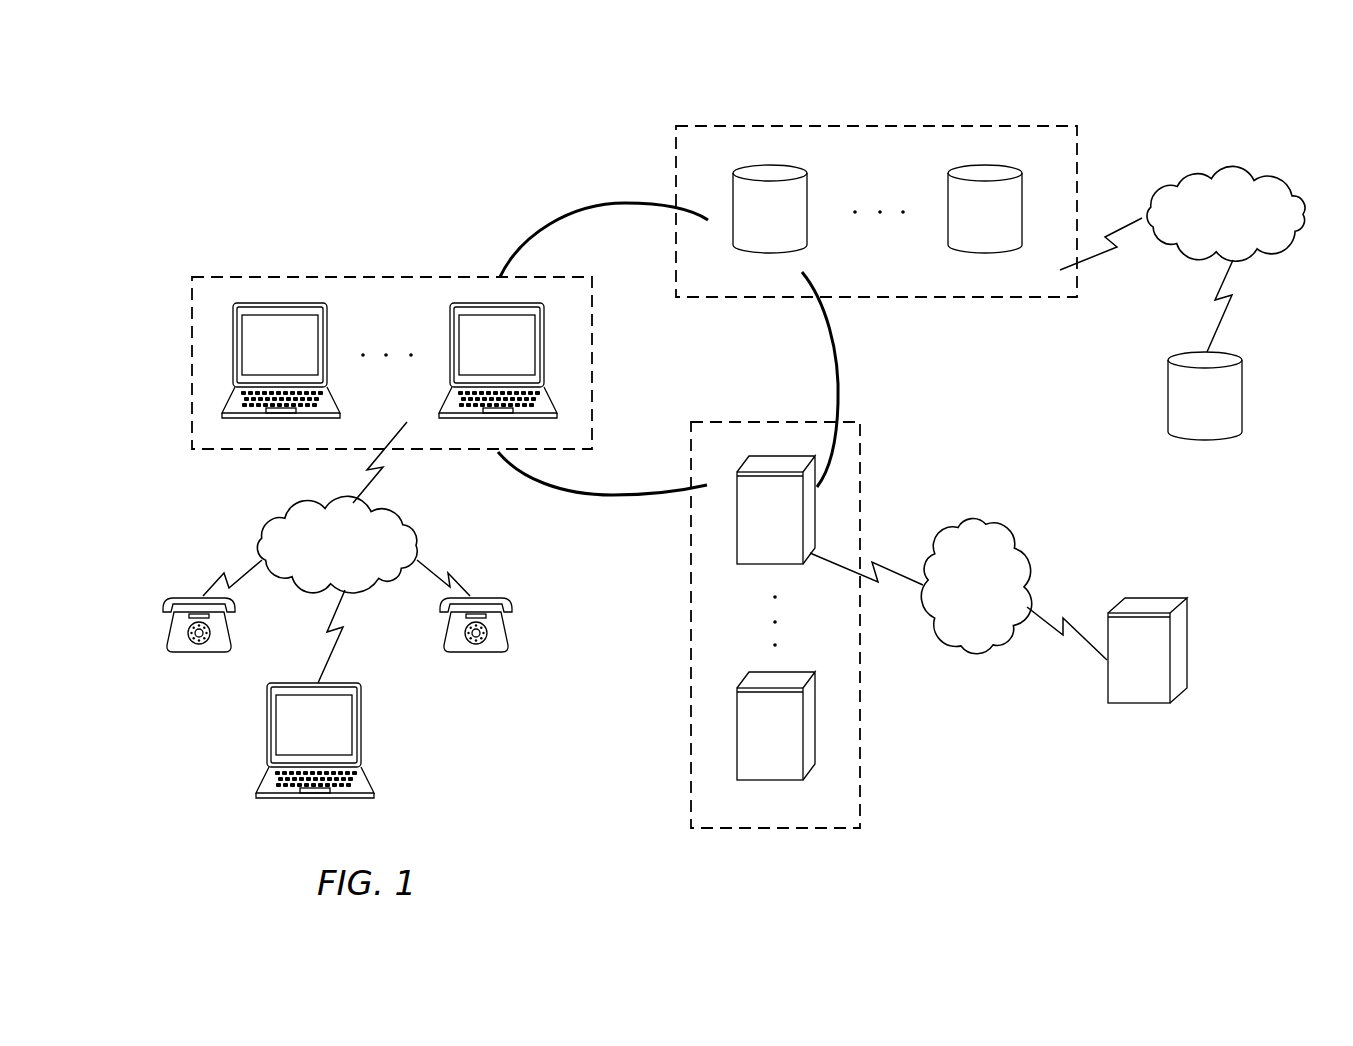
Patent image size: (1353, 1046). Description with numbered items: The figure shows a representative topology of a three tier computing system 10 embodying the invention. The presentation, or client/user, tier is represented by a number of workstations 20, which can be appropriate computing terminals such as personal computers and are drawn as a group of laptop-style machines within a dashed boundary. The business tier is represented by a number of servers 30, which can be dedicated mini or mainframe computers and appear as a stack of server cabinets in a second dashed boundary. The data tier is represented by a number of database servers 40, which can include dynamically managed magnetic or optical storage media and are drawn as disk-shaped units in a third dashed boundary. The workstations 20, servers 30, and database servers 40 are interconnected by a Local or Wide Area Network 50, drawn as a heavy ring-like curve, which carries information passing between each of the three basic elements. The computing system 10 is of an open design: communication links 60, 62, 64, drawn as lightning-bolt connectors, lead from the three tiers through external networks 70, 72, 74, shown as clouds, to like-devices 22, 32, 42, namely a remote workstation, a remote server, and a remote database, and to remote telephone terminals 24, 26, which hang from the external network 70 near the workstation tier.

The three tier computing system 10 is at (224, 114).
The workstations 20 is at (327, 277).
The like-device 22 is at (363, 710).
The remote telephone terminal 24 is at (513, 604).
The remote telephone terminal 26 is at (158, 603).
The servers 30 is at (690, 750).
The like-device 32 is at (1150, 598).
The database servers 40 is at (795, 124).
The like-device 42 is at (1168, 397).
The Local or Wide Area Network 50 is at (838, 370).
The communication link 60 is at (377, 478).
The communication link 62 is at (900, 565).
The communication link 64 is at (1108, 234).
The external network 70 is at (423, 548).
The external network 72 is at (980, 513).
The external network 74 is at (1228, 172).